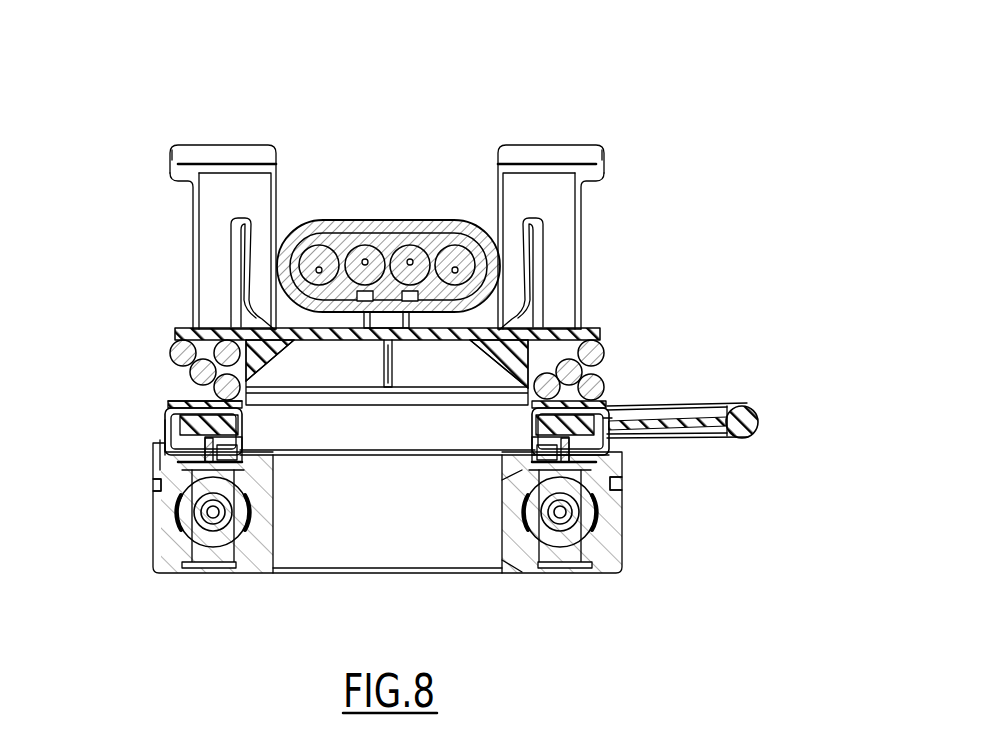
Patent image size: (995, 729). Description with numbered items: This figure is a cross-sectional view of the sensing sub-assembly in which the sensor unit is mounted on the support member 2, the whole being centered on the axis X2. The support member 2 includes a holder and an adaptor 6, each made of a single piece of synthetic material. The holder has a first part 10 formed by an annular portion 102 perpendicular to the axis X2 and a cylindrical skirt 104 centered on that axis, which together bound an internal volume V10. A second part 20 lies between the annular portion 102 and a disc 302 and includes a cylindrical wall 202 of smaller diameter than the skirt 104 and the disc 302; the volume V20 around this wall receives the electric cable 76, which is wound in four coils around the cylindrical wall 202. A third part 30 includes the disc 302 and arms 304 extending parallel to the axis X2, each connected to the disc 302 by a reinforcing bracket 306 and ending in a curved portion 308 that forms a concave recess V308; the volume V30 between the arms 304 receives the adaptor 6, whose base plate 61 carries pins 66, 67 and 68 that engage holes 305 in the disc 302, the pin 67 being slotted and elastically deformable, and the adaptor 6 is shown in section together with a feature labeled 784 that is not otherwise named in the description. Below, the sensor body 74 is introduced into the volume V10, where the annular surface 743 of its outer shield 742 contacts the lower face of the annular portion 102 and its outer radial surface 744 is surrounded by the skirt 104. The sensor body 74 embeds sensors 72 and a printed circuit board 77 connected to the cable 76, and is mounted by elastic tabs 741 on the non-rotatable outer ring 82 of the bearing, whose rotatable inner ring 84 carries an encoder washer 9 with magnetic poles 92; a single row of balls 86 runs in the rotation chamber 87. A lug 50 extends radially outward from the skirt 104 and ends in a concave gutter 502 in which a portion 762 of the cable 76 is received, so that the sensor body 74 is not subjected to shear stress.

The support member 2 is at (495, 88).
The adaptor 6 is at (503, 329).
The encoder washer 9 is at (240, 436).
The first part 10 is at (97, 388).
The second part 20 is at (97, 330).
The third part 30 is at (97, 147).
The lug 50 is at (700, 428).
The base plate 61 is at (313, 332).
The pin 66 is at (441, 353).
The pin 67 is at (378, 347).
The pin 68 is at (330, 353).
The sensors 72 is at (618, 424).
The sensor body 74 is at (250, 402).
The electric cable 76 is at (172, 354).
The printed circuit board 77 is at (600, 407).
The outer ring 82 is at (605, 548).
The inner ring 84 is at (530, 555).
The balls 86 is at (593, 512).
The rotation chamber 87 is at (572, 572).
The magnetic poles 92 is at (565, 442).
The annular portion 102 is at (207, 400).
The cylindrical skirt 104 is at (165, 427).
The cylindrical wall 202 is at (580, 354).
The disc 302 is at (211, 333).
The arms 304 is at (215, 190).
The holes 305 is at (348, 342).
The reinforcing bracket 306 is at (236, 260).
The curved portion 308 is at (172, 152).
The concave gutter 502 is at (748, 407).
The tabs 741 is at (612, 485).
The outer shield 742 is at (617, 418).
The annular surface 743 is at (512, 407).
The outer radial surface 744 is at (162, 430).
The cable portion 762 is at (758, 424).
The shell 784 is at (409, 228).
The internal volume V10 is at (175, 477).
The volume V20 is at (596, 336).
The volume V30 is at (460, 168).
The concave recess V308 is at (247, 154).
The axis X2 is at (387, 592).